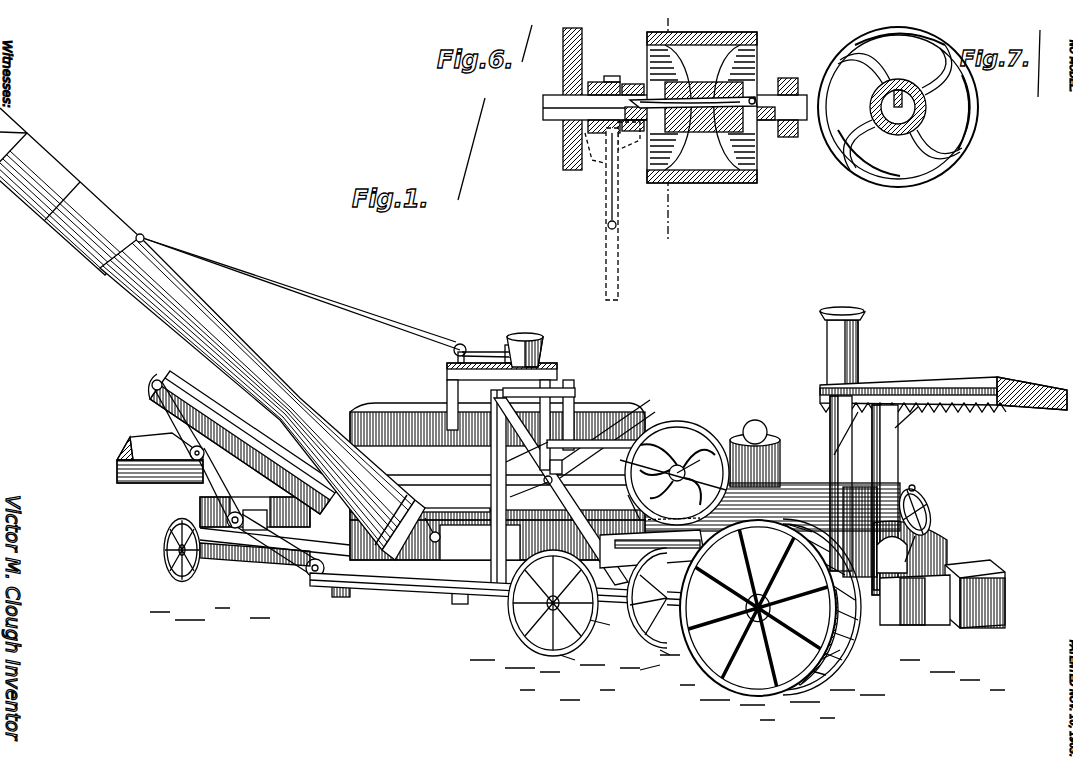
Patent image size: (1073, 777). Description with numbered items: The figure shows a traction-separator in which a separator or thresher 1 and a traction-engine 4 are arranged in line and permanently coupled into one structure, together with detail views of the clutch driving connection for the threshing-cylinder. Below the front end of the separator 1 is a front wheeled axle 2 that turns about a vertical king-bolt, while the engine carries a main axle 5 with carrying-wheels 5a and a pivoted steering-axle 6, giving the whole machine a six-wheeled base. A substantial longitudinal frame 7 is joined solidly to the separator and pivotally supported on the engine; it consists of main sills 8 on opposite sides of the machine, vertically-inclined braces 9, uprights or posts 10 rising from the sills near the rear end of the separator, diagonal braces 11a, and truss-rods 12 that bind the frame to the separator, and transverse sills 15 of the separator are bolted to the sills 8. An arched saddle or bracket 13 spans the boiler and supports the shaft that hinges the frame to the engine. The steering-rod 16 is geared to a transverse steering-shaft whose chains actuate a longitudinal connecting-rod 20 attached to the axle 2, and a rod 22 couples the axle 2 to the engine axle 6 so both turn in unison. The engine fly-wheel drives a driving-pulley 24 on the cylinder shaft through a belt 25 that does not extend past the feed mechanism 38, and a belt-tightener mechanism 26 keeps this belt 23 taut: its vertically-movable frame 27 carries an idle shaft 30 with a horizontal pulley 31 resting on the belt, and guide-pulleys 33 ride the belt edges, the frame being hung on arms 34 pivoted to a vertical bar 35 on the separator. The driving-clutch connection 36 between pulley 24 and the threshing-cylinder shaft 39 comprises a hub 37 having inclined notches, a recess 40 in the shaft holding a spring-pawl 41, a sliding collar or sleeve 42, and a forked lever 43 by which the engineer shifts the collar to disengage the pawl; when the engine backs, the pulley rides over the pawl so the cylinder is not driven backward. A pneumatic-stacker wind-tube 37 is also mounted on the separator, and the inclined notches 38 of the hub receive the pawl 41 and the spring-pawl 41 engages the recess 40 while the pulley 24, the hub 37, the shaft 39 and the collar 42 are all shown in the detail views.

In FIG. 6, the separator 1 is at (563, 70).
In FIG. 1, the separator 1 is at (497, 481).
In FIG. 1, the front wheeled axle 2 is at (187, 550).
In FIG. 1, the traction-engine 4 is at (780, 488).
In FIG. 1, the main axle 5 is at (765, 608).
In FIG. 1, the carrying-wheels 5a is at (955, 563).
In FIG. 1, the steering-axle 6 is at (515, 620).
In FIG. 6, the frame 7 is at (667, 138).
In FIG. 1, the main sills 8 is at (412, 592).
In FIG. 1, the vertically-inclined braces 9 is at (597, 560).
In FIG. 1, the uprights or posts 10 is at (640, 430).
In FIG. 1, the rear front wheel 11a is at (640, 620).
In FIG. 1, the truss-rods 12 is at (430, 606).
In FIG. 1, the saddle or bracket 13 is at (665, 560).
In FIG. 1, the transverse sills 15 is at (338, 586).
In FIG. 1, the steering-rod 16 is at (927, 518).
In FIG. 1, the longitudinal connecting-rod 20 is at (238, 572).
In FIG. 1, the rod 22 is at (260, 565).
In FIG. 1, the drive belt 23 is at (652, 507).
In FIG. 6, the driving-pulley 24 is at (752, 60).
In FIG. 7, the driving-pulley 24 is at (858, 62).
In FIG. 1, the driving-pulley 24 is at (197, 482).
In FIG. 1, the belt 25 is at (404, 475).
In FIG. 1, the belt-tightener mechanism 26 is at (539, 411).
In FIG. 1, the vertically-movable frame 27 is at (576, 402).
In FIG. 1, the idle shaft 30 is at (547, 468).
In FIG. 1, the horizontal pulley 31 is at (596, 435).
In FIG. 1, the guide-pulleys 33 is at (546, 492).
In FIG. 1, the arms 34 is at (531, 382).
In FIG. 1, the vertical bar 35 is at (462, 400).
In FIG. 6, the driving-clutch connection 36 is at (626, 86).
In FIG. 1, the driving-clutch connection 36 is at (233, 510).
In FIG. 6, the hub 37 is at (726, 133).
In FIG. 7, the hub 37 is at (920, 92).
In FIG. 1, the hub 37 is at (170, 353).
In FIG. 7, the inclined notches 38 is at (918, 128).
In FIG. 1, the inclined notches 38 is at (160, 456).
In FIG. 6, the threshing-cylinder shaft 39 is at (786, 137).
In FIG. 7, the threshing-cylinder shaft 39 is at (874, 126).
In FIG. 6, the recess 40 is at (640, 132).
In FIG. 7, the recess 40 is at (870, 108).
In FIG. 6, the spring-pawl 41 is at (745, 84).
In FIG. 7, the spring-pawl 41 is at (876, 85).
In FIG. 6, the collar or sleeve 42 is at (590, 135).
In FIG. 6, the lever 43 is at (618, 236).